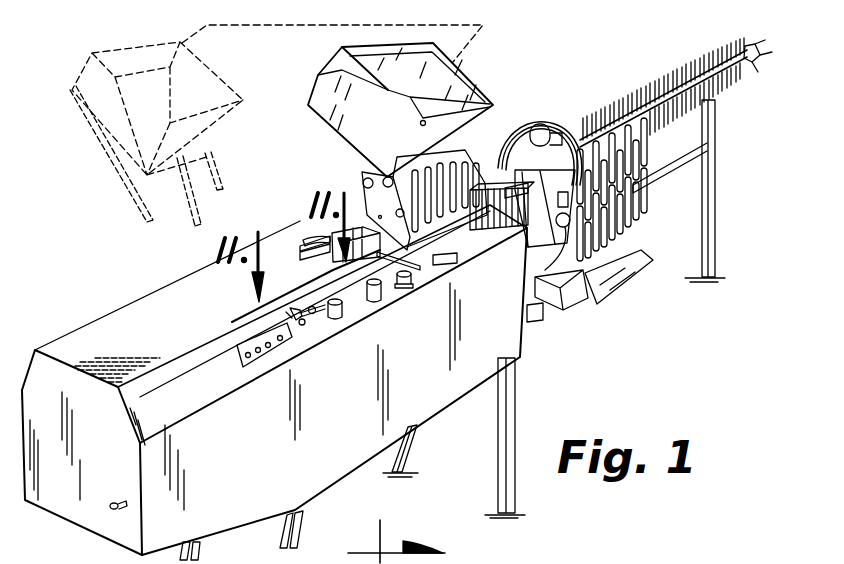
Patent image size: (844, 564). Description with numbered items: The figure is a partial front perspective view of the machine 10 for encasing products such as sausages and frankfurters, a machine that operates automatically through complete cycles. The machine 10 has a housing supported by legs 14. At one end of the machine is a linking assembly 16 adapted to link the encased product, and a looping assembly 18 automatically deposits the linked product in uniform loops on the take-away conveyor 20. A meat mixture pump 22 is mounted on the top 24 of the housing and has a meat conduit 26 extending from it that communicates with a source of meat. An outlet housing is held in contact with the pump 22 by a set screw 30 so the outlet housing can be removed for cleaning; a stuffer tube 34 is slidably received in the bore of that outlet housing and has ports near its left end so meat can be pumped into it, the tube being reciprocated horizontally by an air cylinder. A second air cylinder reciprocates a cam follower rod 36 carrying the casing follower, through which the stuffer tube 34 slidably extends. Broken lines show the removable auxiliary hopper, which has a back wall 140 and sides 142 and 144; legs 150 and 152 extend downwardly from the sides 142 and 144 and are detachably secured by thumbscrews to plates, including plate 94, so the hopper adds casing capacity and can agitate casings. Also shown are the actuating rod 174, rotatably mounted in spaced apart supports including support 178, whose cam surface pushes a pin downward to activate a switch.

The machine 10 is at (105, 313).
The legs 14 is at (408, 474).
The linking assembly 16 is at (490, 176).
The looping assembly 18 is at (567, 131).
The take-away conveyor 20 is at (655, 78).
The meat mixture pump 22 is at (340, 233).
The top 24 is at (303, 247).
The meat conduit 26 is at (308, 235).
The set screw 30 is at (386, 282).
The stuffer tube 34 is at (312, 270).
The cam follower rod 36 is at (347, 290).
The plate 94 is at (360, 182).
The back wall 140 is at (580, 563).
The side 142 is at (460, 88).
The side 144 is at (133, 138).
The leg 150 is at (217, 168).
The leg 152 is at (137, 218).
The actuating rod 174 is at (298, 333).
The support 178 is at (335, 318).